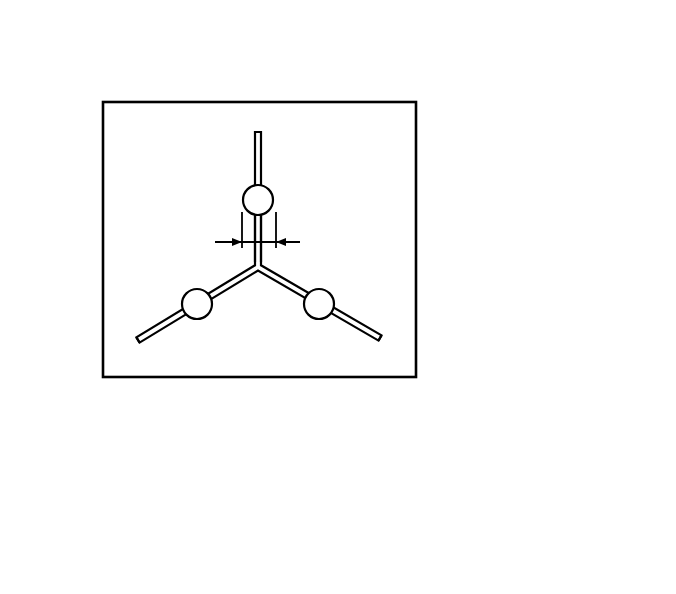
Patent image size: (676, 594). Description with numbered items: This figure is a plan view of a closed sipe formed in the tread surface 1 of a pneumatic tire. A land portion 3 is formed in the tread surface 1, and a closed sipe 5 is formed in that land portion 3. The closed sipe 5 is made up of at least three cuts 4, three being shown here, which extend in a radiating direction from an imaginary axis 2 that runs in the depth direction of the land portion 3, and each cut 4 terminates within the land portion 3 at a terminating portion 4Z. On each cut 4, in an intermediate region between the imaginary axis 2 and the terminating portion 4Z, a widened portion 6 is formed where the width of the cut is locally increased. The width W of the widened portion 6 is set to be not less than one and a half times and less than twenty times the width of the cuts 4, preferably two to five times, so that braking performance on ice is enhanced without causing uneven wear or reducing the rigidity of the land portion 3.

The tread surface 1 is at (392, 87).
The imaginary axis 2 is at (285, 244).
The land portion 3 is at (167, 187).
The cut 4 is at (264, 160).
The terminating portion 4Z is at (258, 131).
The closed sipe 5 is at (293, 213).
The widened portion 6 is at (243, 197).
The width of the widened portion W is at (277, 243).